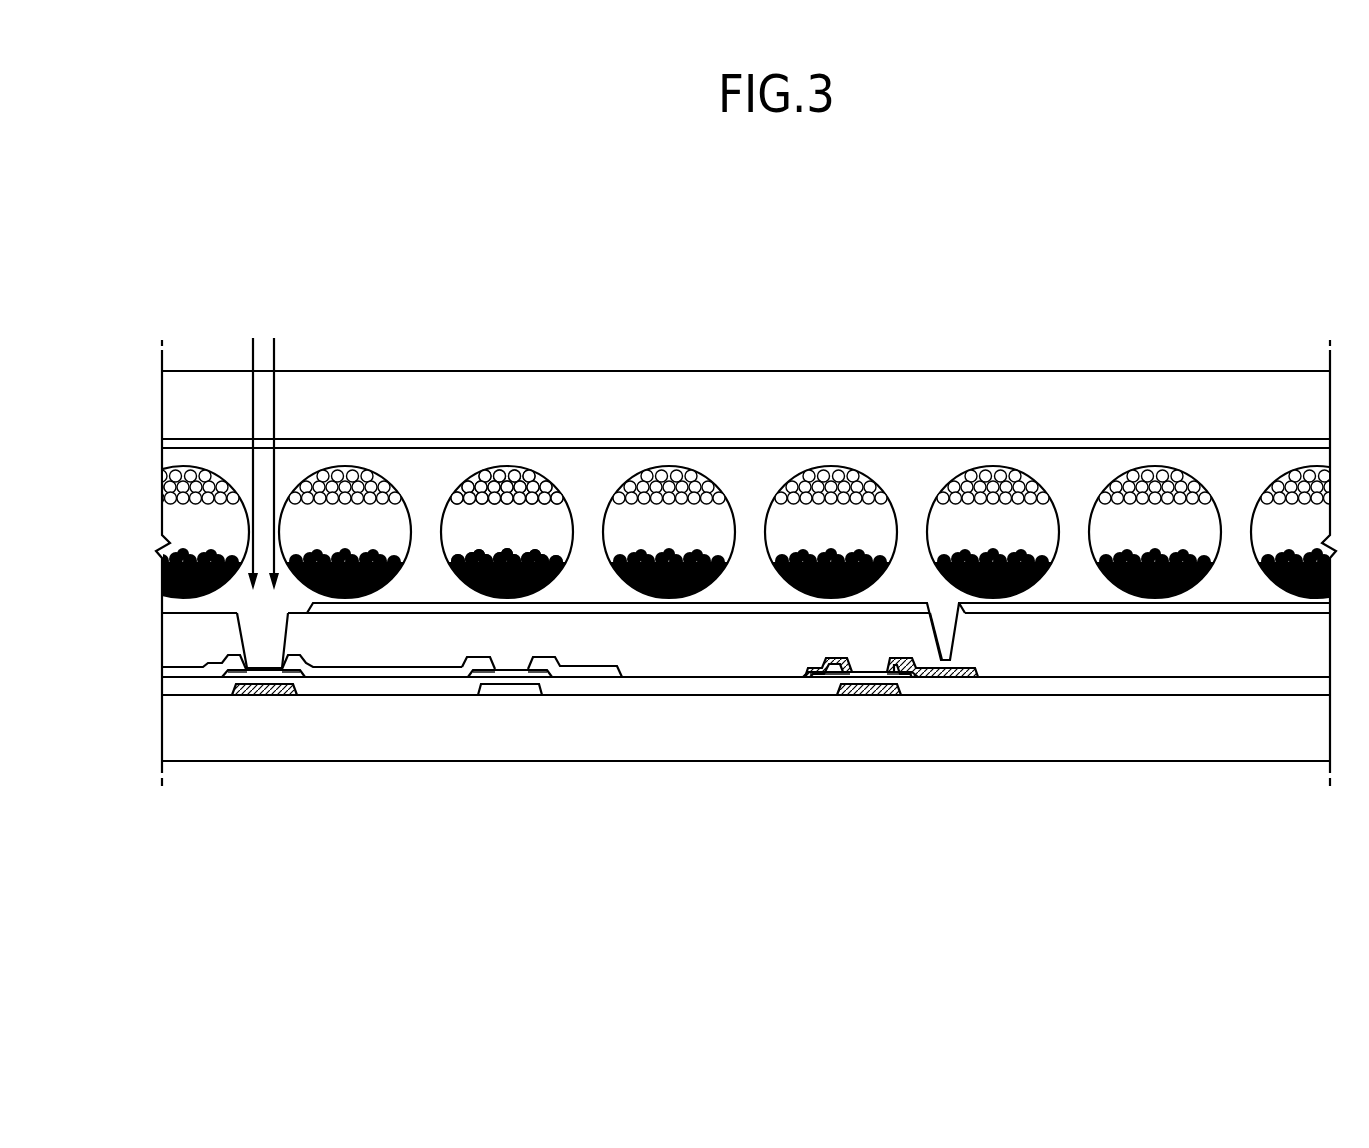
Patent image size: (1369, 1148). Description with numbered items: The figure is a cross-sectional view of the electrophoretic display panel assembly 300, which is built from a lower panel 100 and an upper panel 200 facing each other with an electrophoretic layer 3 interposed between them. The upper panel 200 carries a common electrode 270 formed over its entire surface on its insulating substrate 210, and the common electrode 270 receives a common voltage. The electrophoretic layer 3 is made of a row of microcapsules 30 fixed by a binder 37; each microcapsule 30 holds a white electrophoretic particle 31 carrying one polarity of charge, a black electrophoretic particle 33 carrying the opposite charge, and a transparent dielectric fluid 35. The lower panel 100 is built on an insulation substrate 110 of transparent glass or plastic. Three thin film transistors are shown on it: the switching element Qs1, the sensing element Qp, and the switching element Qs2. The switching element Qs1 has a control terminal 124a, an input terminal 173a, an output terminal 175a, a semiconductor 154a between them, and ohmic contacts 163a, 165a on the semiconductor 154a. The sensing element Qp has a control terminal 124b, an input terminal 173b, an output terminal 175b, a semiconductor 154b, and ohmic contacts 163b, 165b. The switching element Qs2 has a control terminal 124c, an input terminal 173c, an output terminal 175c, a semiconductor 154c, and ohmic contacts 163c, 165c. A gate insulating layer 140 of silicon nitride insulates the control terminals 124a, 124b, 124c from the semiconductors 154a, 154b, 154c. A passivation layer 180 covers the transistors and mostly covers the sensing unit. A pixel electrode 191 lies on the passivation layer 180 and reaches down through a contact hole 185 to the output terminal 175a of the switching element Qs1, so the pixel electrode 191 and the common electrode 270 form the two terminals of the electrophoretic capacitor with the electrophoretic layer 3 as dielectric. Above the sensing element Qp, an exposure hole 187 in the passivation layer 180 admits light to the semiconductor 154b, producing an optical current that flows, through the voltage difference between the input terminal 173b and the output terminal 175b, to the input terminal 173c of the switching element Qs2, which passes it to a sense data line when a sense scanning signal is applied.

The electrophoretic display panel assembly 300 is at (883, 330).
The upper panel 200 is at (152, 372).
The upper insulating substrate 210 is at (1246, 404).
The common electrode 270 is at (1147, 443).
The electrophoretic layer 3 is at (735, 427).
The microcapsule 30 is at (560, 296).
The white electrophoretic particle 31 is at (494, 480).
The black electrophoretic particle 33 is at (545, 563).
The transparent dielectric fluid 35 is at (430, 521).
The binder 37 is at (598, 466).
The lower panel 100 is at (152, 623).
The insulation substrate 110 is at (732, 740).
The control terminal 124a is at (863, 692).
The control terminal 124b is at (257, 690).
The control terminal 124c is at (508, 688).
The gate insulating layer 140 is at (1253, 687).
The semiconductor 154a is at (878, 677).
The semiconductor 154b is at (273, 678).
The semiconductor 154c is at (527, 673).
The ohmic contact 163a is at (833, 672).
The ohmic contact 163b is at (228, 675).
The ohmic contact 163c is at (477, 675).
The ohmic contact 165a is at (900, 673).
The ohmic contact 165b is at (293, 672).
The ohmic contact 165c is at (545, 675).
The input terminal 173a is at (807, 673).
The input terminal 173b is at (205, 672).
The input terminal 173c is at (452, 673).
The output terminal 175a is at (960, 767).
The output terminal 175b is at (372, 765).
The output terminal 175c is at (626, 766).
The passivation layer 180 is at (1183, 655).
The contact hole 185 is at (957, 640).
The exposure hole 187 is at (250, 660).
The pixel electrode 191 is at (1112, 608).
The sensing element Qp is at (295, 797).
The switching element Qs1 is at (884, 799).
The switching element Qs2 is at (579, 798).